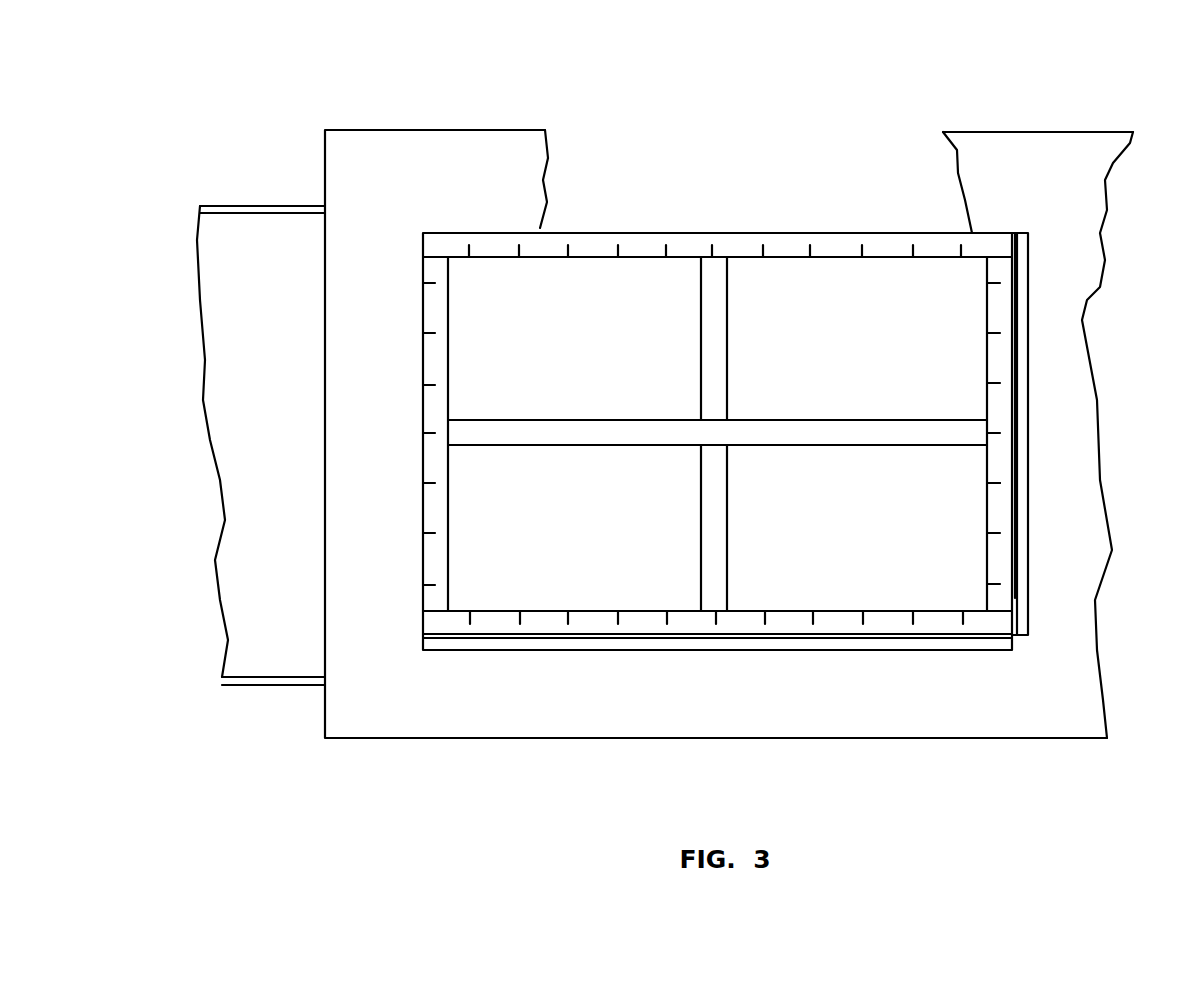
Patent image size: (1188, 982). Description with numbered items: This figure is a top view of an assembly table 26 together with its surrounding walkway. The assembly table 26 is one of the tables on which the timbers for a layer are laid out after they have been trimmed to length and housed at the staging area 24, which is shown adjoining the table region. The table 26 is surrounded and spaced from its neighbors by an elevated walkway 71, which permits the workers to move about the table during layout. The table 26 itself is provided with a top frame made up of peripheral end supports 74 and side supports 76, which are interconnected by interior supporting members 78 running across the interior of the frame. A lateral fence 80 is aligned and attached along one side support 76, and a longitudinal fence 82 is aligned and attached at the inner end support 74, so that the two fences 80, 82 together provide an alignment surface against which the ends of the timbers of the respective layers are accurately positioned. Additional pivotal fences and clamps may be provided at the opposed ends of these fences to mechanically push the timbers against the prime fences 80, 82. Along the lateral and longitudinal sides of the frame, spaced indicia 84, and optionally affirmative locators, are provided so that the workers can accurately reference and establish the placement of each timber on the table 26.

The staging area 24 is at (240, 613).
The assembly table 26 is at (838, 231).
The elevated walkway 71 is at (450, 153).
The peripheral end support 74 is at (430, 355).
The side support 76 is at (600, 240).
The interior supporting member 78 is at (803, 427).
The lateral fence 80 is at (677, 647).
The longitudinal fence 82 is at (1016, 517).
The spaced indicia 84 is at (567, 247).